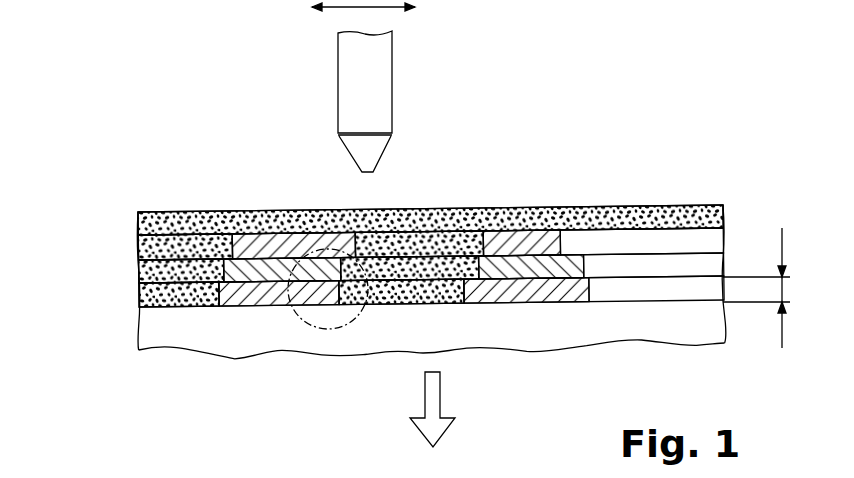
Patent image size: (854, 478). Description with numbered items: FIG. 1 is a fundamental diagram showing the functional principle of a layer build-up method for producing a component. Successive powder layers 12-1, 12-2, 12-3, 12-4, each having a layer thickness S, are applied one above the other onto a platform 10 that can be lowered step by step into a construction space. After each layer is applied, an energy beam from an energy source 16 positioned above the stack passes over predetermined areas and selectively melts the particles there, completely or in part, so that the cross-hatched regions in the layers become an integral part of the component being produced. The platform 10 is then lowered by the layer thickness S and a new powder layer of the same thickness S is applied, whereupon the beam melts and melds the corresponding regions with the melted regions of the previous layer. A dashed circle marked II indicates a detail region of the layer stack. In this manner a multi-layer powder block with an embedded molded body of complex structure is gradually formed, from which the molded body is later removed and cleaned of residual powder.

The platform 10 is at (228, 372).
The powder layer 12-1 is at (140, 298).
The powder layer 12-2 is at (142, 272).
The powder layer 12-3 is at (145, 249).
The powder layer 12-4 is at (148, 224).
The energy source 16 is at (380, 82).
The layer thickness S is at (786, 288).
The detail view reference II is at (327, 333).